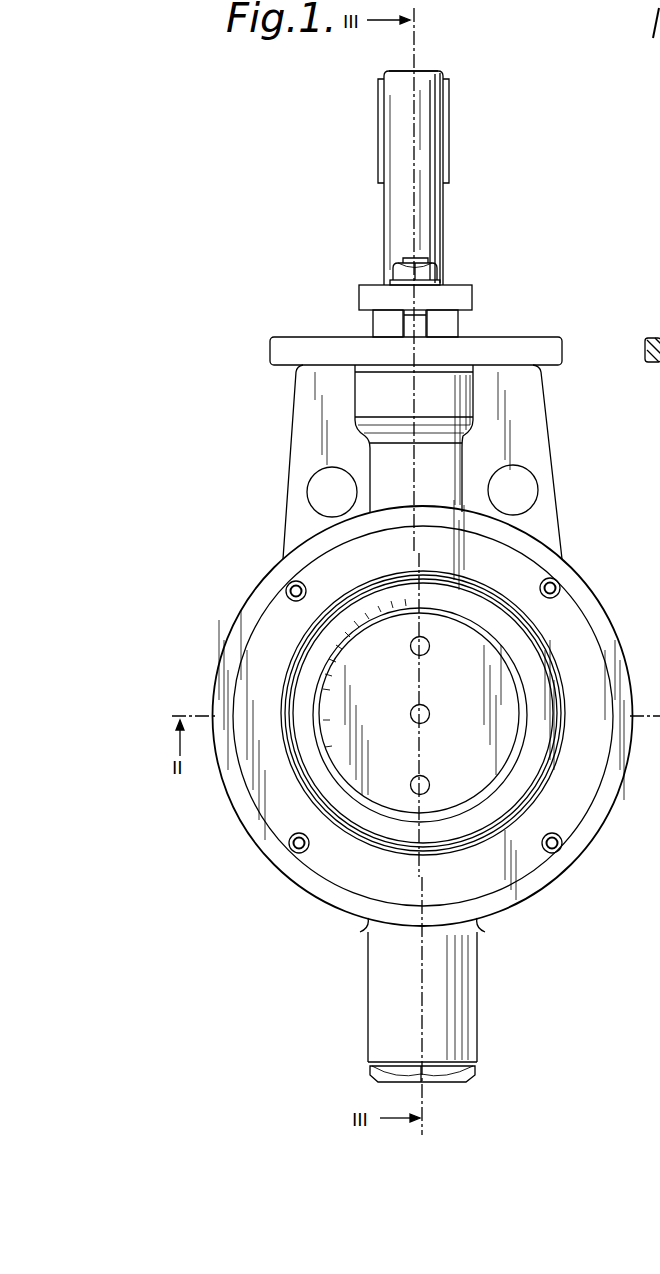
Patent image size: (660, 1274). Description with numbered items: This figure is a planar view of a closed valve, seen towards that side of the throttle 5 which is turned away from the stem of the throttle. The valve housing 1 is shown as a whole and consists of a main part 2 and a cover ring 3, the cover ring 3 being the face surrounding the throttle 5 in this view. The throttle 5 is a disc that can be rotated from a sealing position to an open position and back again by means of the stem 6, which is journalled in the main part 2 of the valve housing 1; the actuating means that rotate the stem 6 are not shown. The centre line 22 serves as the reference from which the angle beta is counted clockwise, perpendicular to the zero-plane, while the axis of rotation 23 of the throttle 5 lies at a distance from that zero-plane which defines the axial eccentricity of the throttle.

The valve housing 1 is at (577, 569).
The main part 2 is at (594, 596).
The cover ring 3 is at (587, 642).
The throttle 5 is at (460, 689).
The stem 6 is at (392, 133).
The centre line 22 is at (430, 722).
The axis of rotation 23 is at (405, 203).